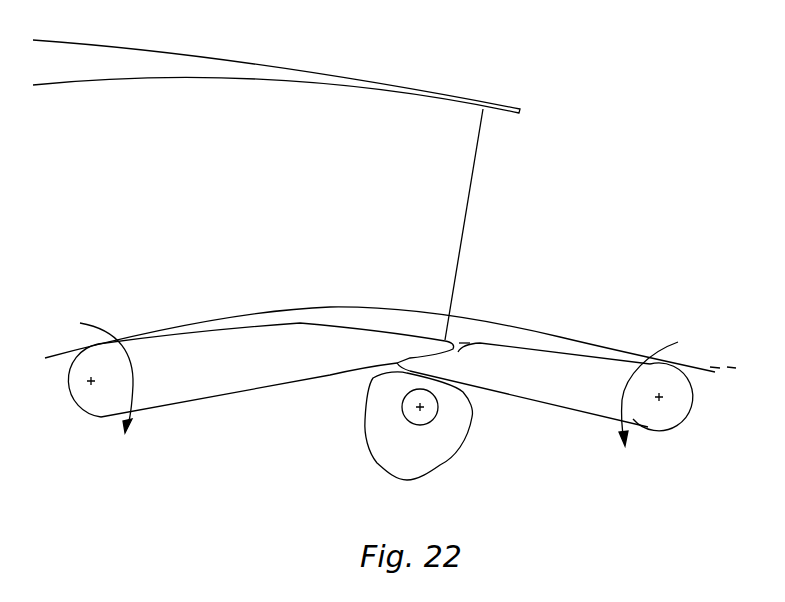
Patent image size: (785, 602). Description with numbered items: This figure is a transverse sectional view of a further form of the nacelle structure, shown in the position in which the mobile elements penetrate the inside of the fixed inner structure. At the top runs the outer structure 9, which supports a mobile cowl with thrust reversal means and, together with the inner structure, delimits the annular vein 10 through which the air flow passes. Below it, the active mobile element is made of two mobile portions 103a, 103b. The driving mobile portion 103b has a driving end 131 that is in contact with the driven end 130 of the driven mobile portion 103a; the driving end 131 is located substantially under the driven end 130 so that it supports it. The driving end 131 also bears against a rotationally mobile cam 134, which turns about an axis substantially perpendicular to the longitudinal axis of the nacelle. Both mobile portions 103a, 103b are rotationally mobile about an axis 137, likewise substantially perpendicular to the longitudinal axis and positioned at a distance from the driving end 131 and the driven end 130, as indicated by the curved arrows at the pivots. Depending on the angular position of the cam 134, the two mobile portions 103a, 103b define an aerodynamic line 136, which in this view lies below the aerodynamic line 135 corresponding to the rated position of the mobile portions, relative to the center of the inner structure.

The outer structure 9 is at (443, 93).
The annular vein 10 is at (359, 224).
The driven end 130 is at (425, 346).
The driving end 131 is at (397, 367).
The driven mobile portion 103a is at (213, 373).
The driving mobile portion 103b is at (555, 390).
The cam 134 is at (392, 457).
The aerodynamic line 135 is at (613, 350).
The aerodynamic line 136 is at (708, 363).
The axis 137 is at (92, 382).